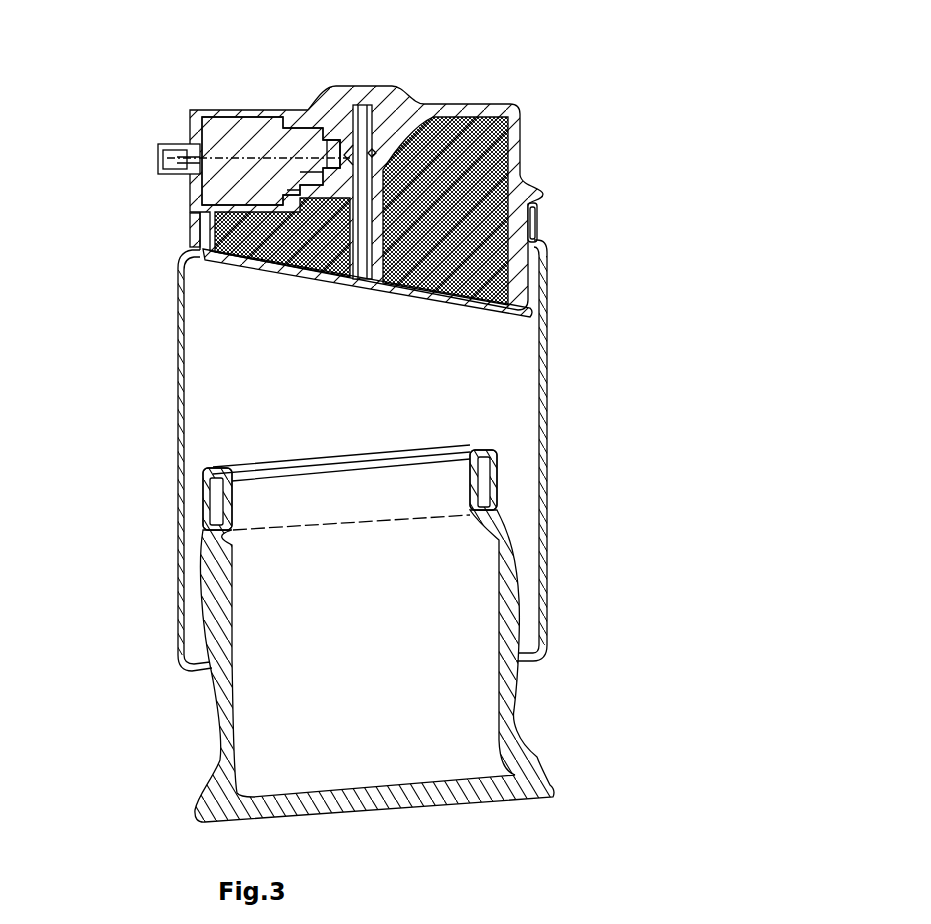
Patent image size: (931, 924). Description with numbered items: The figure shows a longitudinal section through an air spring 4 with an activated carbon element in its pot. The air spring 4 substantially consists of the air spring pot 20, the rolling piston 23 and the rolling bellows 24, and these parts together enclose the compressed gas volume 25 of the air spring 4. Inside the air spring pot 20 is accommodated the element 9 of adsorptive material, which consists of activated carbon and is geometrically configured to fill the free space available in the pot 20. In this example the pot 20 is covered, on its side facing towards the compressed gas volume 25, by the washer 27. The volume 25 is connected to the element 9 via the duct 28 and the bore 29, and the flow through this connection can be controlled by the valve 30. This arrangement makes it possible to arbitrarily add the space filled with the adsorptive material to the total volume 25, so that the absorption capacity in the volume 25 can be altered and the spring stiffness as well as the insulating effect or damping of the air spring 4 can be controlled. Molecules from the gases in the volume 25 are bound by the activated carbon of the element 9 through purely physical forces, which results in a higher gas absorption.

The air spring 4 is at (459, 92).
The element of adsorptive material 9 is at (483, 212).
The air spring pot 20 is at (520, 138).
The rolling piston 23 is at (537, 650).
The rolling bellows 24 is at (549, 458).
The compressed gas volume 25 is at (236, 378).
The washer 27 is at (407, 295).
The duct 28 is at (365, 330).
The bore 29 is at (308, 177).
The valve 30 is at (213, 150).